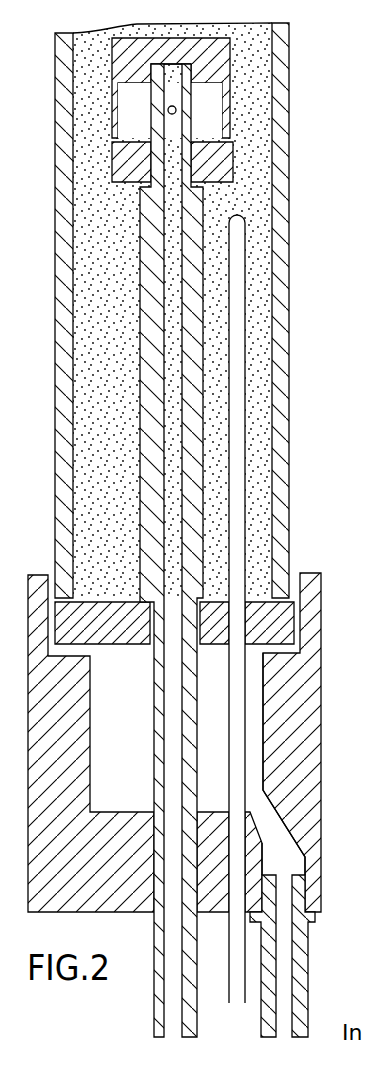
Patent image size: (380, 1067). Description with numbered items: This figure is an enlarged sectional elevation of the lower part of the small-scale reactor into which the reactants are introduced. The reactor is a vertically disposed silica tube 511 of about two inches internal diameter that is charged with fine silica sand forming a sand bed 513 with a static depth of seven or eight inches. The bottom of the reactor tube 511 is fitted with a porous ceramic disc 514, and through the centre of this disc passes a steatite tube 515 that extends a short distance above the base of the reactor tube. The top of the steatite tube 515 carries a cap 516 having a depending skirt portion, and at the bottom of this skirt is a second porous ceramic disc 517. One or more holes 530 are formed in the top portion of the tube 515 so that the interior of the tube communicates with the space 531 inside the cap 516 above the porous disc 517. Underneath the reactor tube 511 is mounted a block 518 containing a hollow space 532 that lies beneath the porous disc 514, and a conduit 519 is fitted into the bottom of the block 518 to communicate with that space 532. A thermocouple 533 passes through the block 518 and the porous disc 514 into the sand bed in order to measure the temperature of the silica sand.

The silica tube 511 is at (275, 373).
The sand bed 513 is at (262, 405).
The porous ceramic disc 514 is at (283, 615).
The steatite tube 515 is at (195, 283).
The cap 516 is at (218, 68).
The porous ceramic disc 517 is at (222, 169).
The block 518 is at (312, 786).
The conduit 519 is at (302, 971).
The holes 530 is at (176, 108).
The space 531 is at (210, 123).
The hollow space 532 is at (270, 707).
The thermocouple 533 is at (235, 441).